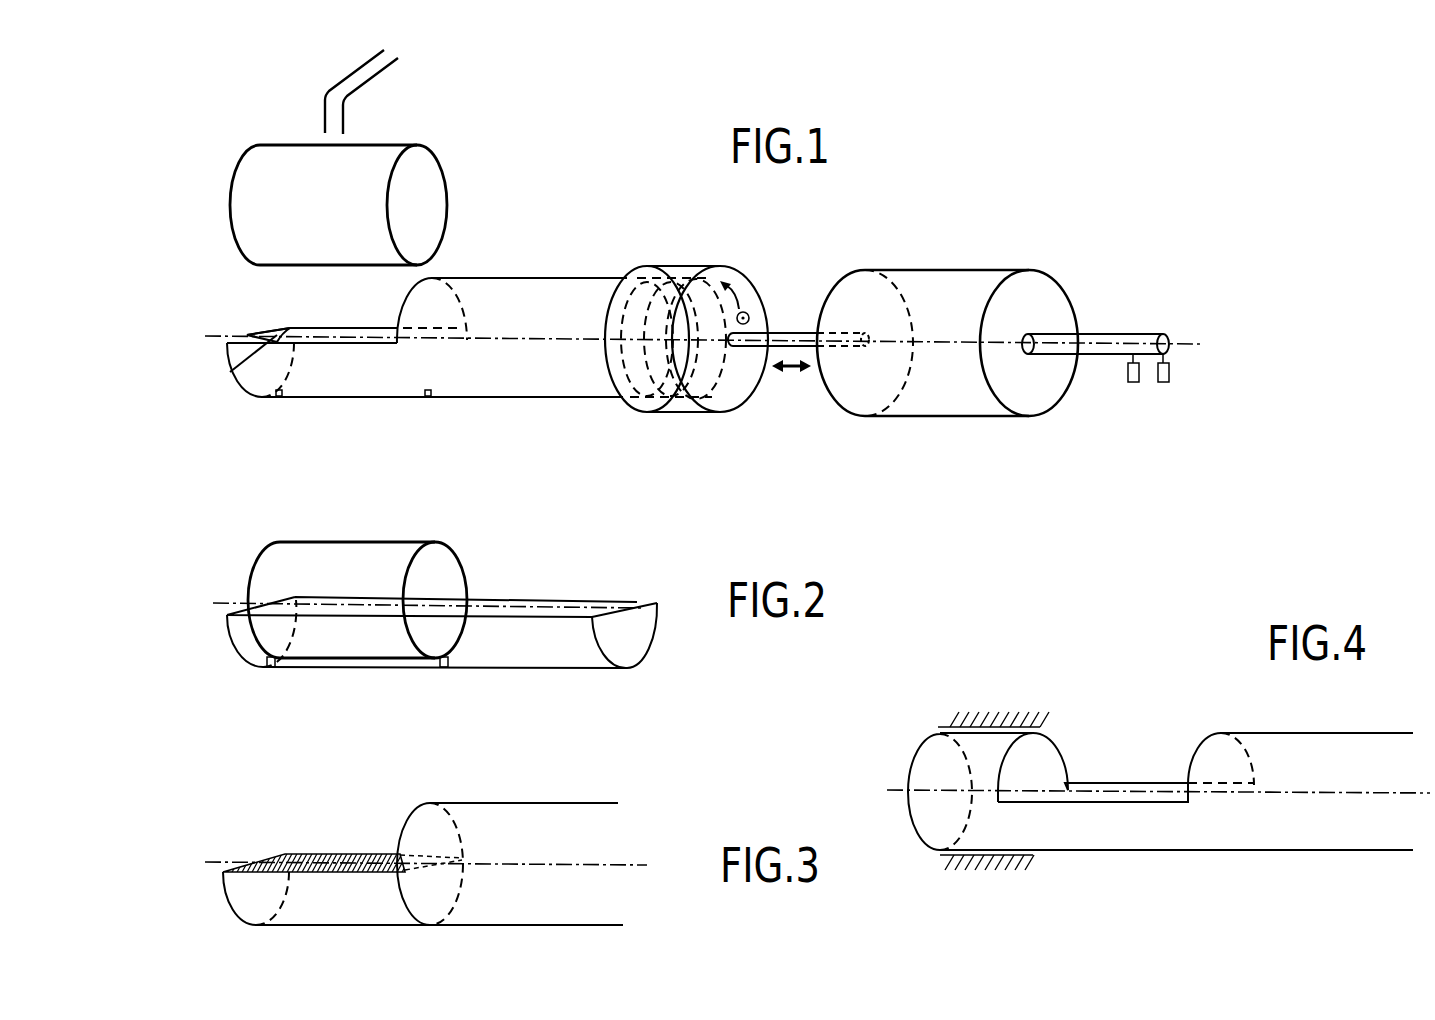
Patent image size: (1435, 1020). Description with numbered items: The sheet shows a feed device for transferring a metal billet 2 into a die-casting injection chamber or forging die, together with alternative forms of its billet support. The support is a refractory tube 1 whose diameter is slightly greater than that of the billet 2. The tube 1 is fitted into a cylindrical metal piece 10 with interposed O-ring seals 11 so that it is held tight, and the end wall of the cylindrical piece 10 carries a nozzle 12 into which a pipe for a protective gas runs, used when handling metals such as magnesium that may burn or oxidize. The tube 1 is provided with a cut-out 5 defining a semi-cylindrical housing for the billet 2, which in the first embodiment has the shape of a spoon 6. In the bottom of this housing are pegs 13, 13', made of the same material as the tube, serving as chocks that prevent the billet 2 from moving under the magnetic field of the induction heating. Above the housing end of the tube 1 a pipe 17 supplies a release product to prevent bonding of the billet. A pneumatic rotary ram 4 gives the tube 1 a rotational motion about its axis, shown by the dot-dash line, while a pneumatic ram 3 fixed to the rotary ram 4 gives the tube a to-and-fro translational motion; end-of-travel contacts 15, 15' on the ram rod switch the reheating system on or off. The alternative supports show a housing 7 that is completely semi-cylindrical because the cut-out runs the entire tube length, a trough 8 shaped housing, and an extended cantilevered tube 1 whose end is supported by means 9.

In FIG. 1, the tube 1 is at (548, 300).
In FIG. 4, the tube 1 is at (1248, 732).
In FIG. 1, the billet 2 is at (423, 203).
In FIG. 1, the pneumatic ram 3 is at (957, 287).
In FIG. 1, the pneumatic ram 4 is at (735, 272).
In FIG. 1, the cut-out 5 is at (246, 322).
In FIG. 1, the spoon 6 is at (230, 372).
In FIG. 2, the housing 7 is at (623, 600).
In FIG. 3, the trough 8 is at (263, 860).
In FIG. 4, the means 9 is at (1013, 720).
In FIG. 1, the cylindrical metal piece 10 is at (633, 280).
In FIG. 1, the O-ring seals 11 is at (650, 300).
In FIG. 1, the nozzle 12 is at (748, 312).
In FIG. 1, the peg 13 is at (303, 418).
In FIG. 1, the peg 13' is at (457, 418).
In FIG. 1, the end-of-travel contact 15 is at (1095, 386).
In FIG. 1, the end-of-travel contact 15' is at (1194, 396).
In FIG. 1, the pipe 17 is at (398, 60).